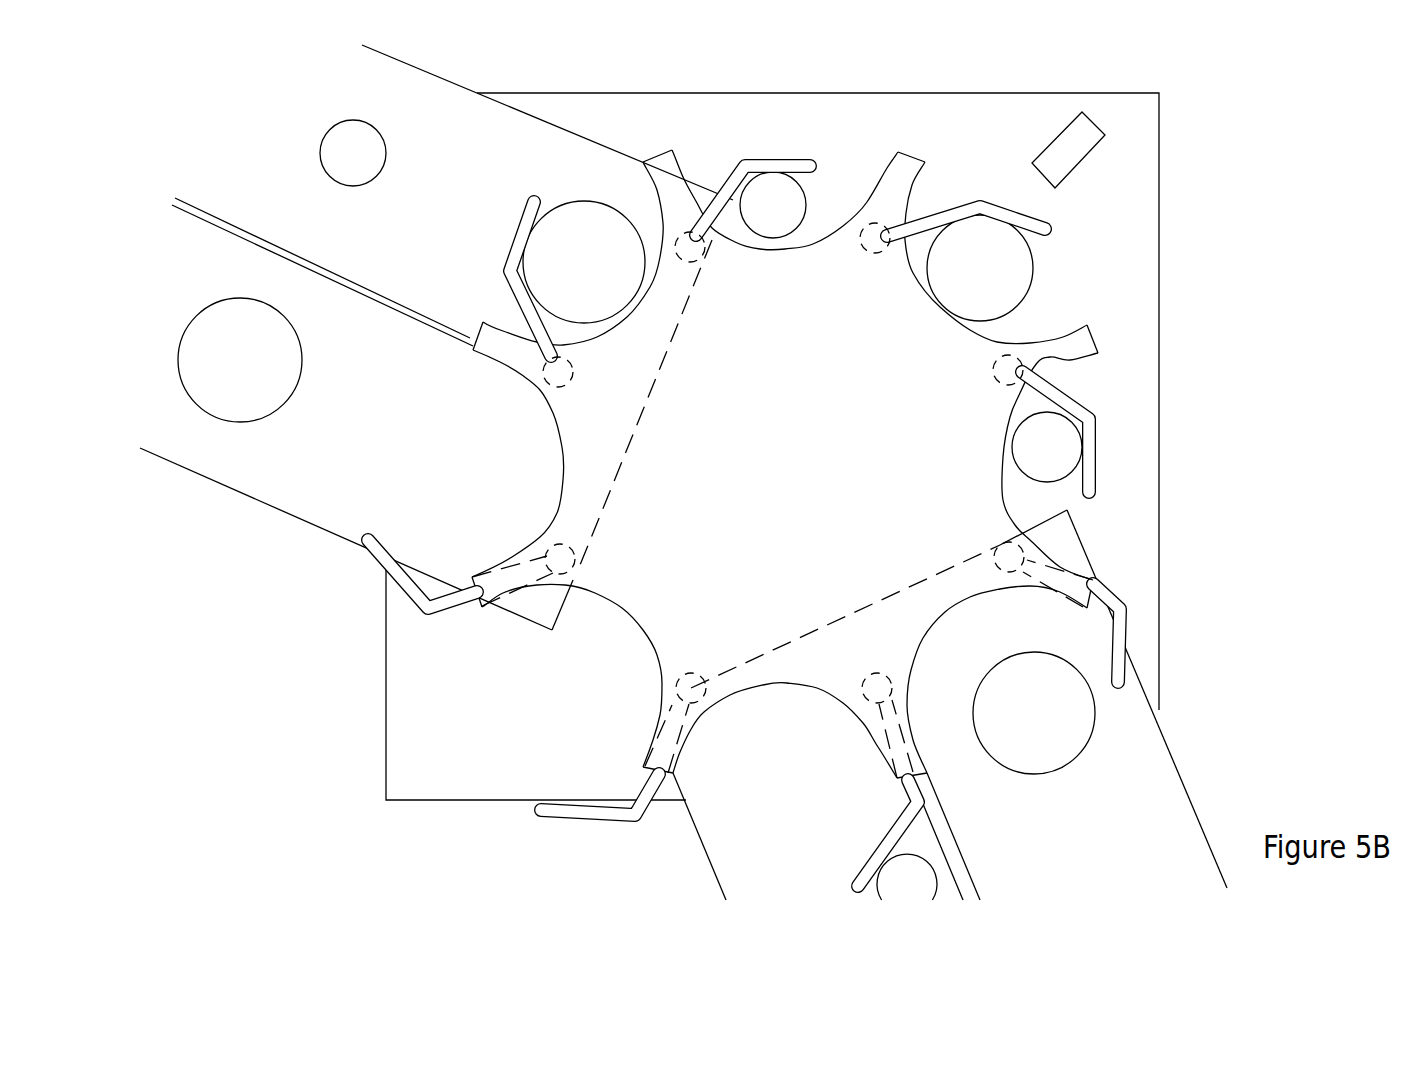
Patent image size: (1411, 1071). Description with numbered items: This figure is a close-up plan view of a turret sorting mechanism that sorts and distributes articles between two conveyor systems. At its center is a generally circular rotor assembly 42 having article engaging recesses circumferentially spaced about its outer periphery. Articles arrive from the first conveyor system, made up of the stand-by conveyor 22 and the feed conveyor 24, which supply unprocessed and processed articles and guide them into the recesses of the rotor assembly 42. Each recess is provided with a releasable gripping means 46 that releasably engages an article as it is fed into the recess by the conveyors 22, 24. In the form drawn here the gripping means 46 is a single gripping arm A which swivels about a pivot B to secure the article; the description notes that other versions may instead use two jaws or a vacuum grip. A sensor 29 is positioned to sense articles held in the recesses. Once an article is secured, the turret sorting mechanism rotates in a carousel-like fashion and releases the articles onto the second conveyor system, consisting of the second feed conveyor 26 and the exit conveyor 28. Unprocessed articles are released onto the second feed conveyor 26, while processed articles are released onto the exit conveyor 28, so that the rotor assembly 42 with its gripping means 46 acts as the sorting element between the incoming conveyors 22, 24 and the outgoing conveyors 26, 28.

The stand-by conveyor 22 is at (295, 495).
The feed conveyor 24 is at (413, 82).
The second feed conveyor 26 is at (730, 862).
The exit conveyor 28 is at (1148, 790).
The sensor 29 is at (1080, 140).
The rotor assembly 42 is at (940, 397).
The releasable gripping means 46 is at (1120, 607).
The gripping arm A is at (1092, 460).
The pivot B is at (1045, 358).